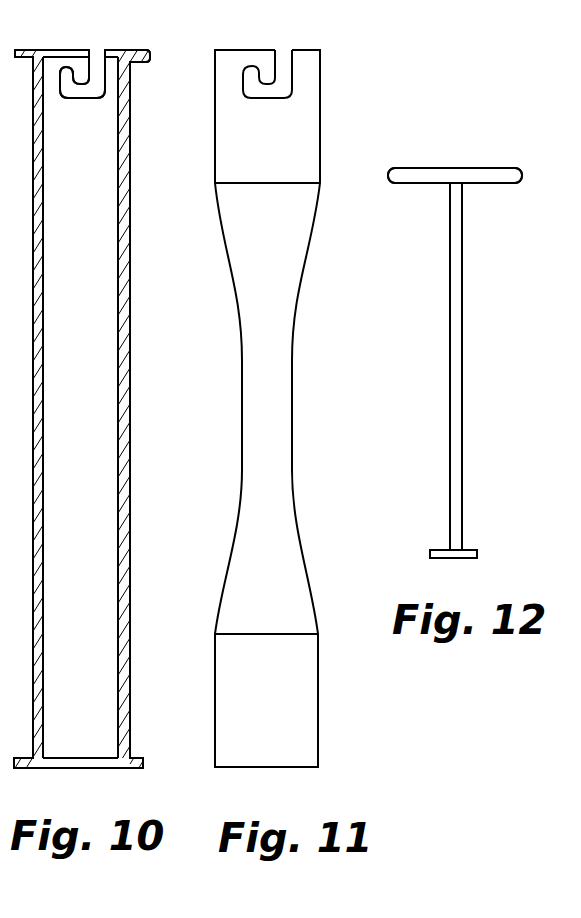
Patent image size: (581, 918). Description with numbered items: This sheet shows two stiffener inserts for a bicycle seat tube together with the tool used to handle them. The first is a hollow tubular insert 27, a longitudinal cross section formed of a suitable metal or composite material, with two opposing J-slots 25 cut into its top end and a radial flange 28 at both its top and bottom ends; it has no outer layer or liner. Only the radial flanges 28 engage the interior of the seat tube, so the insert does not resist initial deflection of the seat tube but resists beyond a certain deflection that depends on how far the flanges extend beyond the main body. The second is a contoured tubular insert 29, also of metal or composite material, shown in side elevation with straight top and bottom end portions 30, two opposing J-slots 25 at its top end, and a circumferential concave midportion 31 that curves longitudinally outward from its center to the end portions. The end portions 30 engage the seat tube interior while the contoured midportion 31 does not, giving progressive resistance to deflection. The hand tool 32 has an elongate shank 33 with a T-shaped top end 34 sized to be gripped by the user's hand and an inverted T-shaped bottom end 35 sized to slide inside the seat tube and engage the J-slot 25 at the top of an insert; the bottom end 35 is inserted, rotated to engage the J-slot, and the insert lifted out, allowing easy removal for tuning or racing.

In FIG. 10, the J-slot 25 is at (95, 60).
In FIG. 11, the J-slot 25 is at (282, 58).
In FIG. 10, the hollow tubular insert 27 is at (131, 222).
In FIG. 10, the radial flange 28 is at (150, 56).
In FIG. 11, the tubular insert 29 is at (250, 363).
In FIG. 11, the end portion 30 is at (320, 115).
In FIG. 11, the circumferential concave midportion 31 is at (293, 400).
In FIG. 12, the hand tool 32 is at (440, 268).
In FIG. 12, the elongate shank 33 is at (462, 252).
In FIG. 12, the T-shaped top end 34 is at (463, 168).
In FIG. 12, the inverted T-shaped bottom end 35 is at (470, 550).